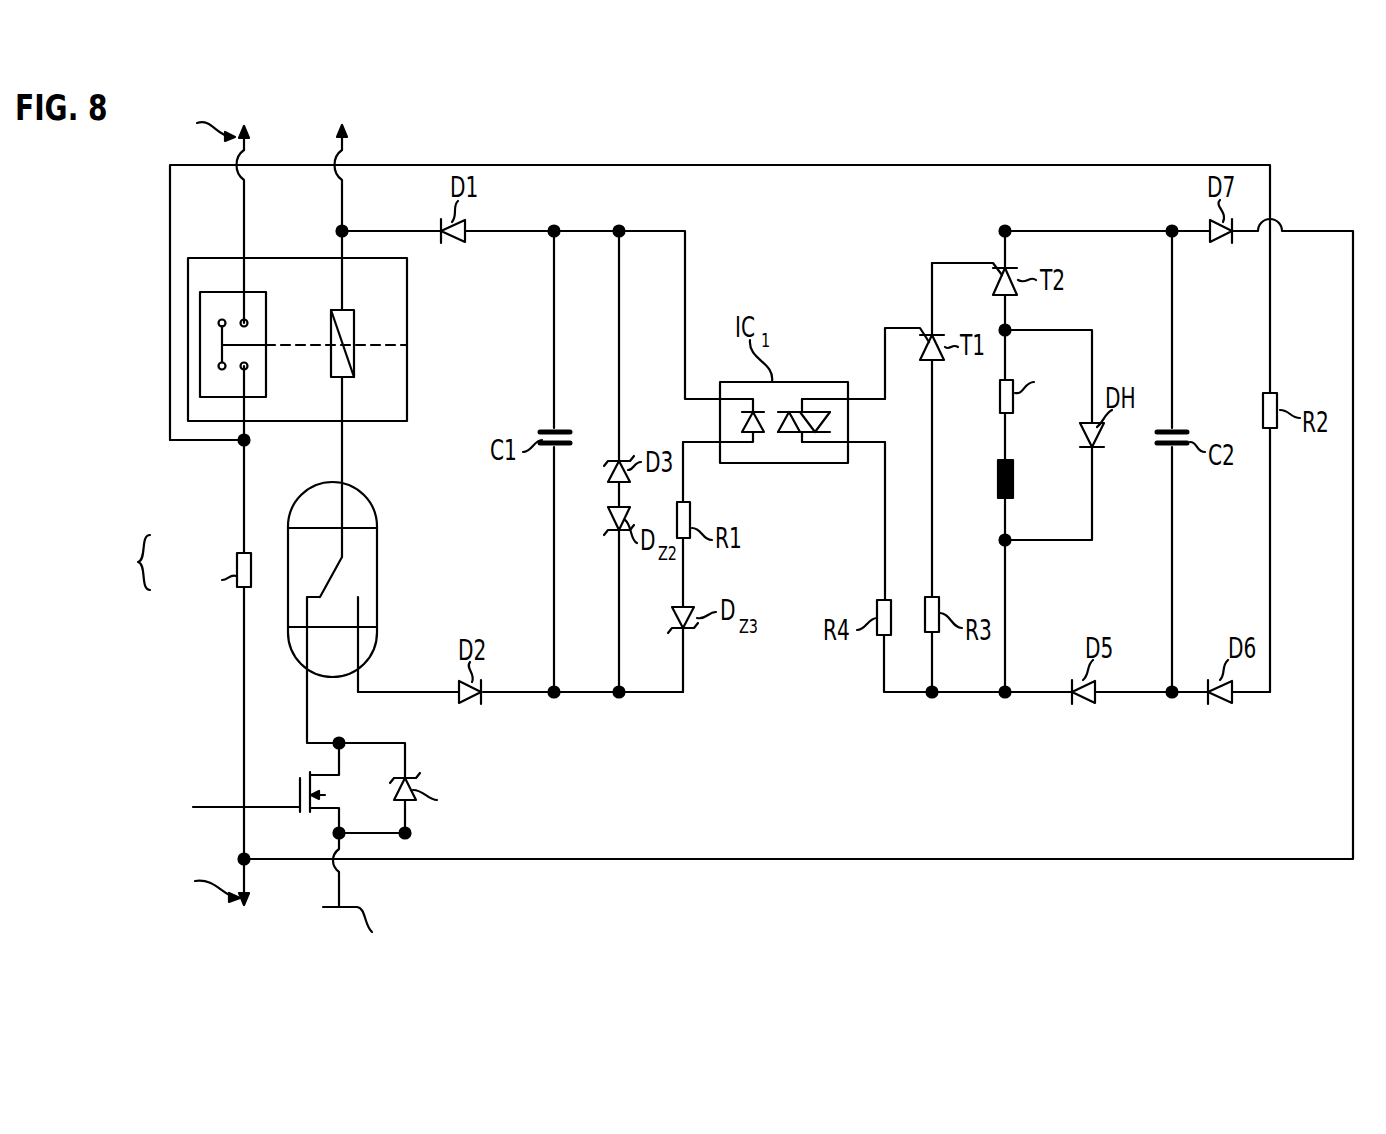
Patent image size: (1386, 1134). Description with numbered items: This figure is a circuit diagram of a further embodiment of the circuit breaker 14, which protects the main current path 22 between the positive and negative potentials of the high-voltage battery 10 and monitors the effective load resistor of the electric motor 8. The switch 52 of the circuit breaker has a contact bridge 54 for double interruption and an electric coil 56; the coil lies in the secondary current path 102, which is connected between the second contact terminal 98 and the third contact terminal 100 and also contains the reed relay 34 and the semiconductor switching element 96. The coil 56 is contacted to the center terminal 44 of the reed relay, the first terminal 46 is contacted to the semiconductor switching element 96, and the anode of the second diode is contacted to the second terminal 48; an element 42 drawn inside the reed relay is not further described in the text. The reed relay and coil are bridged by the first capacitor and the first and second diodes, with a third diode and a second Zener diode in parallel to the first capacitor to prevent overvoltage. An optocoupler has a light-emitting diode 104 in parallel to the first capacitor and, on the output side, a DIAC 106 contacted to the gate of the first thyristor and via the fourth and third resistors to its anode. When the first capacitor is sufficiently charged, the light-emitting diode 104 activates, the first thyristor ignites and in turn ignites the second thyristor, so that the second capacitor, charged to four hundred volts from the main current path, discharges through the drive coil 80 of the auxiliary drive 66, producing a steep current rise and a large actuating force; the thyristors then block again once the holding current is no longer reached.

The electric motor 8 is at (138, 568).
The high-voltage battery 10 is at (258, 133).
The circuit breaker 14 is at (1308, 178).
The main current path 22 is at (240, 202).
The reed relay 34 is at (288, 548).
The contact tip 42 is at (327, 592).
The center terminal 44 is at (342, 512).
The first terminal 46 is at (300, 636).
The second terminal 48 is at (358, 648).
The switch 52 is at (279, 339).
The contact bridge 54 is at (213, 349).
The electric coil 56 is at (353, 360).
The auxiliary drive 66 is at (1004, 529).
The drive coil 80 is at (1030, 487).
The semiconductor switching element 96 is at (297, 816).
The second contact terminal 98 is at (338, 887).
The third contact terminal 100 is at (343, 197).
The secondary current path 102 is at (342, 203).
The light-emitting diode 104 is at (760, 432).
The DIAC 106 is at (782, 405).